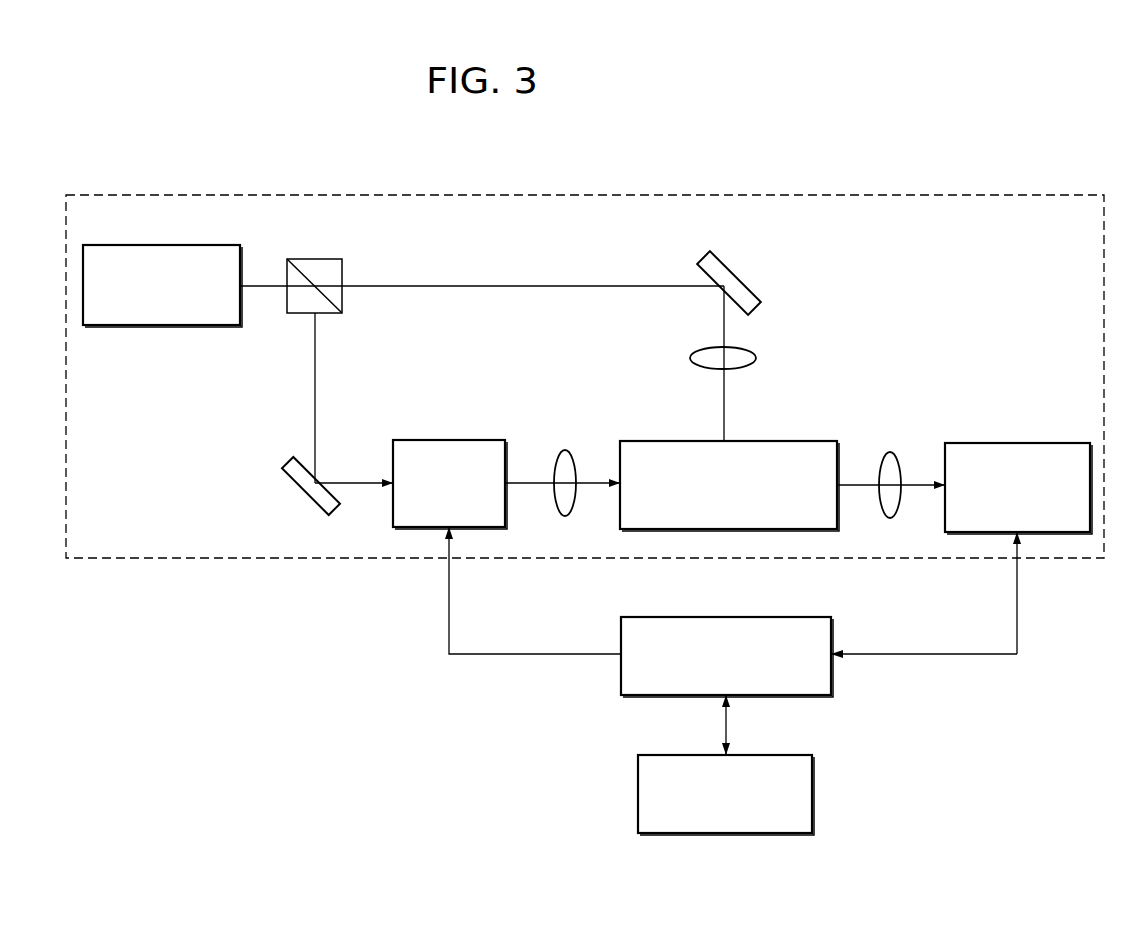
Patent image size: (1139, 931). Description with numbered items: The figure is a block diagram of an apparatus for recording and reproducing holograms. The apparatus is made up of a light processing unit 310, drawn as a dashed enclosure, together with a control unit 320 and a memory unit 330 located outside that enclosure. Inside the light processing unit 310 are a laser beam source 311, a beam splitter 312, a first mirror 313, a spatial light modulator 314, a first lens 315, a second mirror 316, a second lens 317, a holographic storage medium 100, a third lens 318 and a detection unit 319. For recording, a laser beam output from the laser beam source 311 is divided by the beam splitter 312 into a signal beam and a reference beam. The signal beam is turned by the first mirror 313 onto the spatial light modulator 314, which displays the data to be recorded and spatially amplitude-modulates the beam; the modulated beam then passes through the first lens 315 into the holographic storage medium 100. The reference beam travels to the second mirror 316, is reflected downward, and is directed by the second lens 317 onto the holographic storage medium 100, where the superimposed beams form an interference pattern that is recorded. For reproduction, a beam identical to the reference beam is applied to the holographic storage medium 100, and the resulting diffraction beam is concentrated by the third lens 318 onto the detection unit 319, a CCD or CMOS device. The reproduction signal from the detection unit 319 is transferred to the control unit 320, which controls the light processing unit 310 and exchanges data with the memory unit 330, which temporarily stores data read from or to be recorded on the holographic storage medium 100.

The holographic storage medium 100 is at (752, 440).
The light processing unit 310 is at (222, 558).
The laser beam source 311 is at (185, 245).
The beam splitter 312 is at (323, 257).
The first mirror 313 is at (303, 497).
The spatial light modulator (SLM) 314 is at (448, 438).
The first lens 315 is at (565, 450).
The second mirror 316 is at (738, 273).
The second lens 317 is at (757, 358).
The third lens 318 is at (890, 452).
The detection unit 319 is at (1017, 443).
The control unit 320 is at (745, 617).
The memory unit 330 is at (767, 755).